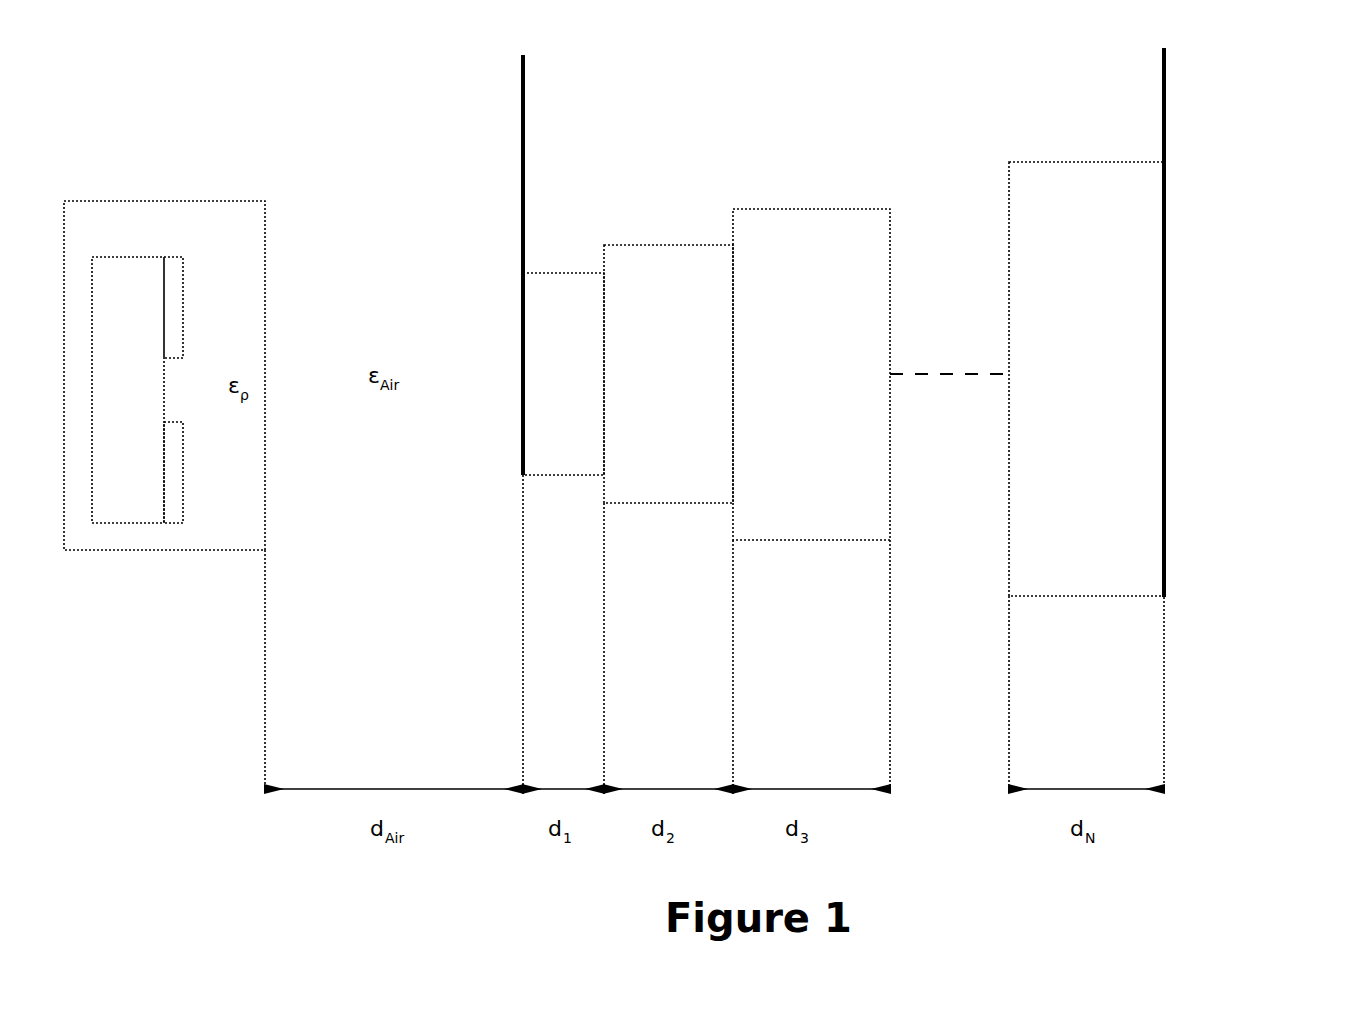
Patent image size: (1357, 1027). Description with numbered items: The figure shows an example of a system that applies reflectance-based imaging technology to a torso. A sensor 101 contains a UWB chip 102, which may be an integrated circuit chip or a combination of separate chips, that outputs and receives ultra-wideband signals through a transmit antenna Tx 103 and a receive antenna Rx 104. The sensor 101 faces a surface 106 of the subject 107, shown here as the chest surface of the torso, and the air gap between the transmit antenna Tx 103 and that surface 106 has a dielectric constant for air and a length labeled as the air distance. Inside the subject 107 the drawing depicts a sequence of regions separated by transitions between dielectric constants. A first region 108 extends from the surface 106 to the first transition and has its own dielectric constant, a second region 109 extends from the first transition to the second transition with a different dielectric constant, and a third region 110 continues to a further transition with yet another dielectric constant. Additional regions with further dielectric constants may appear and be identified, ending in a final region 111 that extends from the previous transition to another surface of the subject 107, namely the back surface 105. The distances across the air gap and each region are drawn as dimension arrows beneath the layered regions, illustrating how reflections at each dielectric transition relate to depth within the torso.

The sensor 101 is at (172, 201).
The UWB chip 102 is at (128, 523).
The transmit antenna Tx 103 is at (220, 266).
The receive antenna Rx 104 is at (220, 513).
The back surface 105 is at (1172, 63).
The surface 106 is at (520, 67).
The subject 107 is at (890, 110).
The d_1 region 108 is at (560, 270).
The d_2 region 109 is at (675, 243).
The third tissue layer 110 is at (805, 208).
The final region 111 is at (1053, 163).